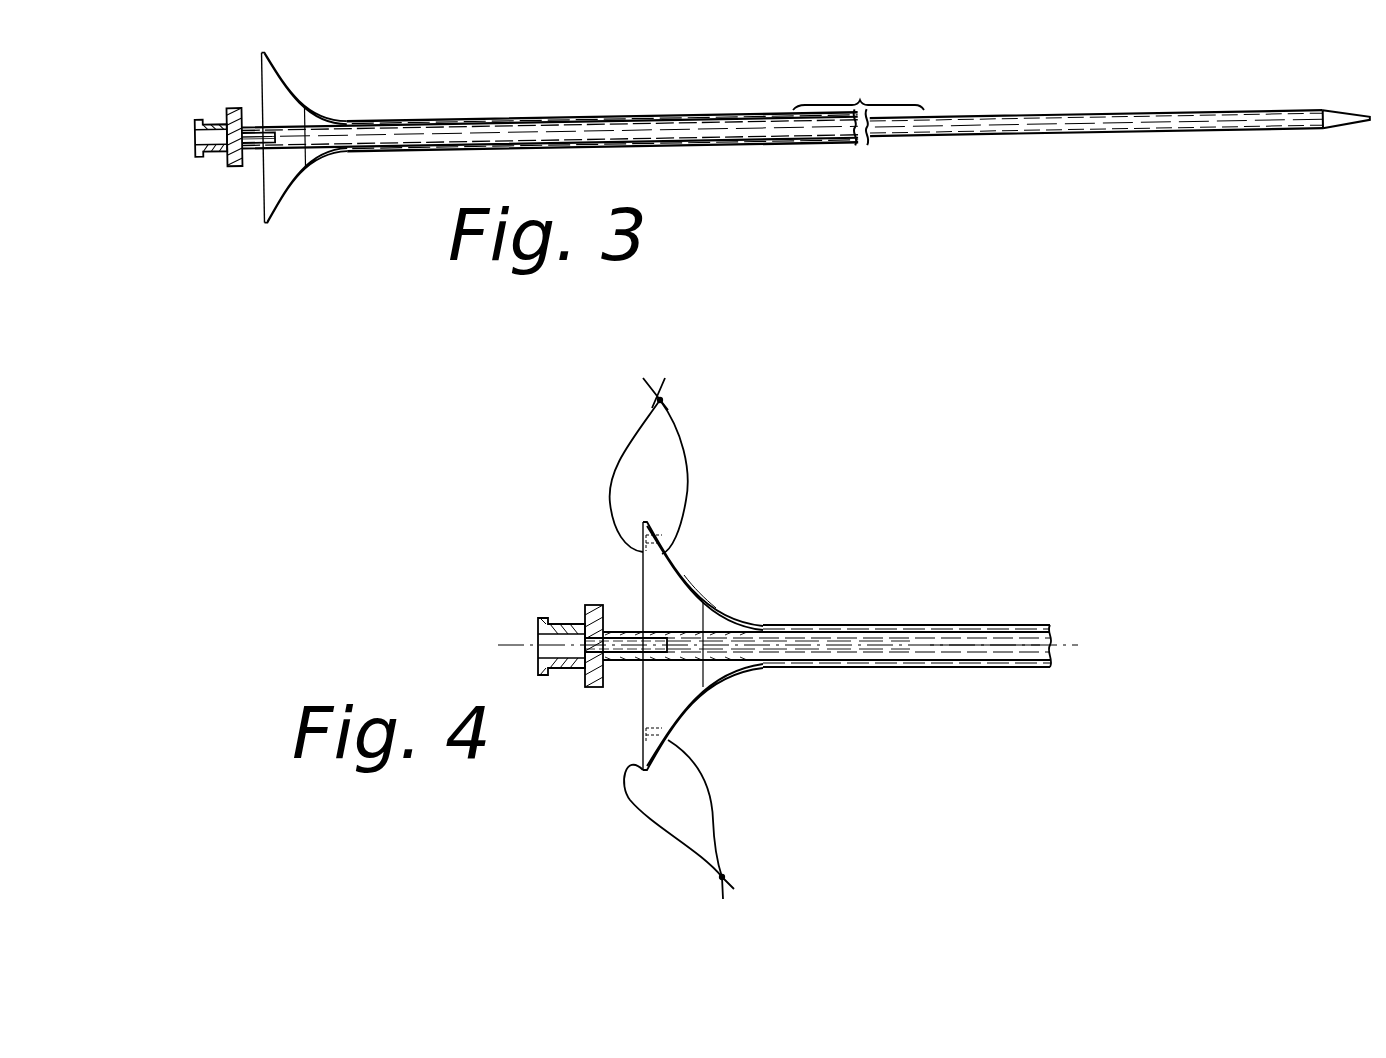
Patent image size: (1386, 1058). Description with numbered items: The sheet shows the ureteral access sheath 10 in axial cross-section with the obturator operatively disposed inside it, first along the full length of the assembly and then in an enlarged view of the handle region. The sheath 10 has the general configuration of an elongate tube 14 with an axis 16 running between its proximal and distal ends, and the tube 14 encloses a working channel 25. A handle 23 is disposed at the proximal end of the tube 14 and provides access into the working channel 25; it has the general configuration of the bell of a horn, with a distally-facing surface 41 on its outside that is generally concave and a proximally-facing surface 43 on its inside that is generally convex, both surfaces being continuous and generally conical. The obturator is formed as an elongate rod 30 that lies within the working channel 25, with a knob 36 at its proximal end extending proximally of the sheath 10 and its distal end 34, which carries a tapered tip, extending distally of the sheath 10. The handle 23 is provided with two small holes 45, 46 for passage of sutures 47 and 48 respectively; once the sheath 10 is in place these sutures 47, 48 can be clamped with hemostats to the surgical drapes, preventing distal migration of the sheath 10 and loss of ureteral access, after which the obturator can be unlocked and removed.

In FIG. 4, the ureteral access sheath 10 is at (1006, 683).
In FIG. 3, the elongate tube 14 is at (722, 118).
In FIG. 4, the elongate tube 14 is at (1025, 625).
In FIG. 4, the axis 16 is at (970, 645).
In FIG. 3, the handle 23 is at (287, 92).
In FIG. 4, the handle 23 is at (814, 547).
In FIG. 4, the working channel 25 is at (921, 645).
In FIG. 3, the elongate rod 30 is at (1040, 127).
In FIG. 4, the elongate rod 30 is at (722, 660).
In FIG. 3, the distal end 34 is at (1348, 140).
In FIG. 3, the knob 36 is at (210, 158).
In FIG. 4, the knob 36 is at (560, 625).
In FIG. 4, the distally-facing surface 41 is at (688, 578).
In FIG. 4, the proximally-facing surface 43 is at (648, 558).
In FIG. 4, the hole 45 is at (663, 552).
In FIG. 4, the hole 46 is at (710, 788).
In FIG. 4, the suture 47 is at (625, 458).
In FIG. 4, the suture 48 is at (713, 837).